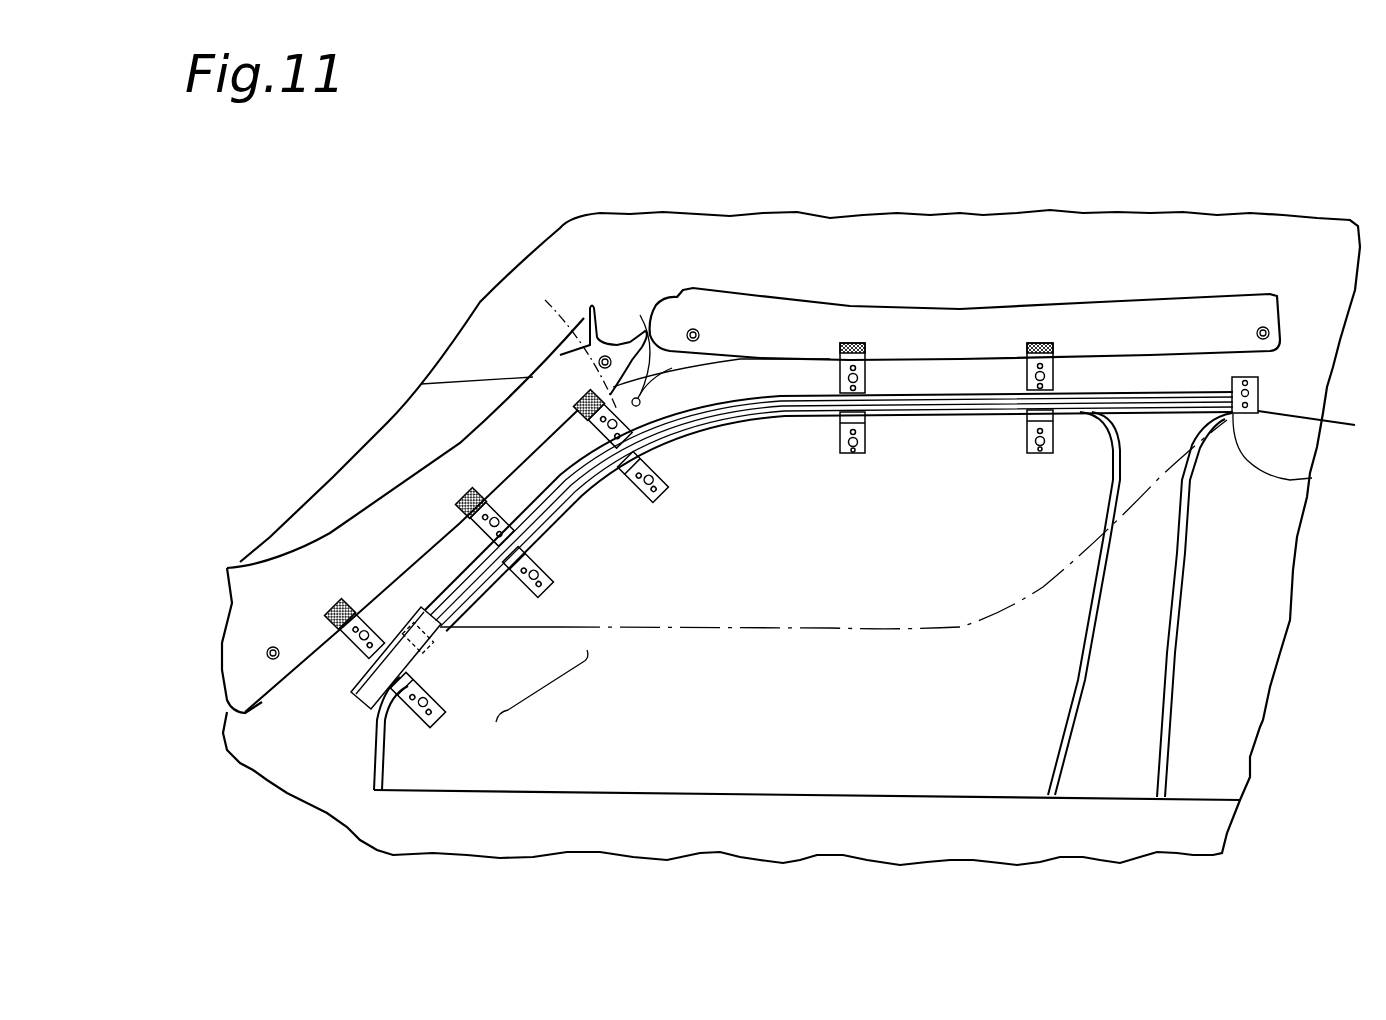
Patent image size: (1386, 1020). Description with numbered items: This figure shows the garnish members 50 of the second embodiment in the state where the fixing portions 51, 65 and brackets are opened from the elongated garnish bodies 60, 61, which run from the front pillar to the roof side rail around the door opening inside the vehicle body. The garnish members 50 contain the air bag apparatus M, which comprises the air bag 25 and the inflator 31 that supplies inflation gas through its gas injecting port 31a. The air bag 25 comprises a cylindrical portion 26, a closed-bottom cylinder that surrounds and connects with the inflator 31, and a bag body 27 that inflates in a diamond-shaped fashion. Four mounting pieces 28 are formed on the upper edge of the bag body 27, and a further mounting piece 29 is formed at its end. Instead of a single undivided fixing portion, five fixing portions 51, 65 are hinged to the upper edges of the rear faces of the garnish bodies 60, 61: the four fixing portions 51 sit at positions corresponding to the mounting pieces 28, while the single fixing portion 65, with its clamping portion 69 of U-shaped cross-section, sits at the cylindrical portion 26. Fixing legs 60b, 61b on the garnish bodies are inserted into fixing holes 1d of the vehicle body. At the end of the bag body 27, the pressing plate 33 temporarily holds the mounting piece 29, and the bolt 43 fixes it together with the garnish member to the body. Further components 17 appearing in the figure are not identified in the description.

The fixing holes 1d is at (562, 232).
The strap 17 is at (866, 455).
The air bag 25 is at (493, 580).
The cylindrical portion 26 is at (374, 703).
The bag body 27 is at (795, 413).
The mounting pieces 28 is at (866, 375).
The mounting piece 29 is at (1276, 388).
The inflator 31 is at (428, 655).
The gas injecting port 31a is at (407, 610).
The pressing plate 33 is at (1259, 402).
The bolt 43 is at (1312, 478).
The garnish members 50 is at (1170, 278).
The fixing portions 51 is at (590, 440).
The garnish body 60 is at (947, 320).
The fixing legs 60b is at (693, 328).
The garnish body 61 is at (370, 520).
The fixing legs 61b is at (228, 643).
The fixing portion 65 is at (333, 648).
The clamping portion 69 is at (443, 703).
The air bag apparatus M is at (542, 688).